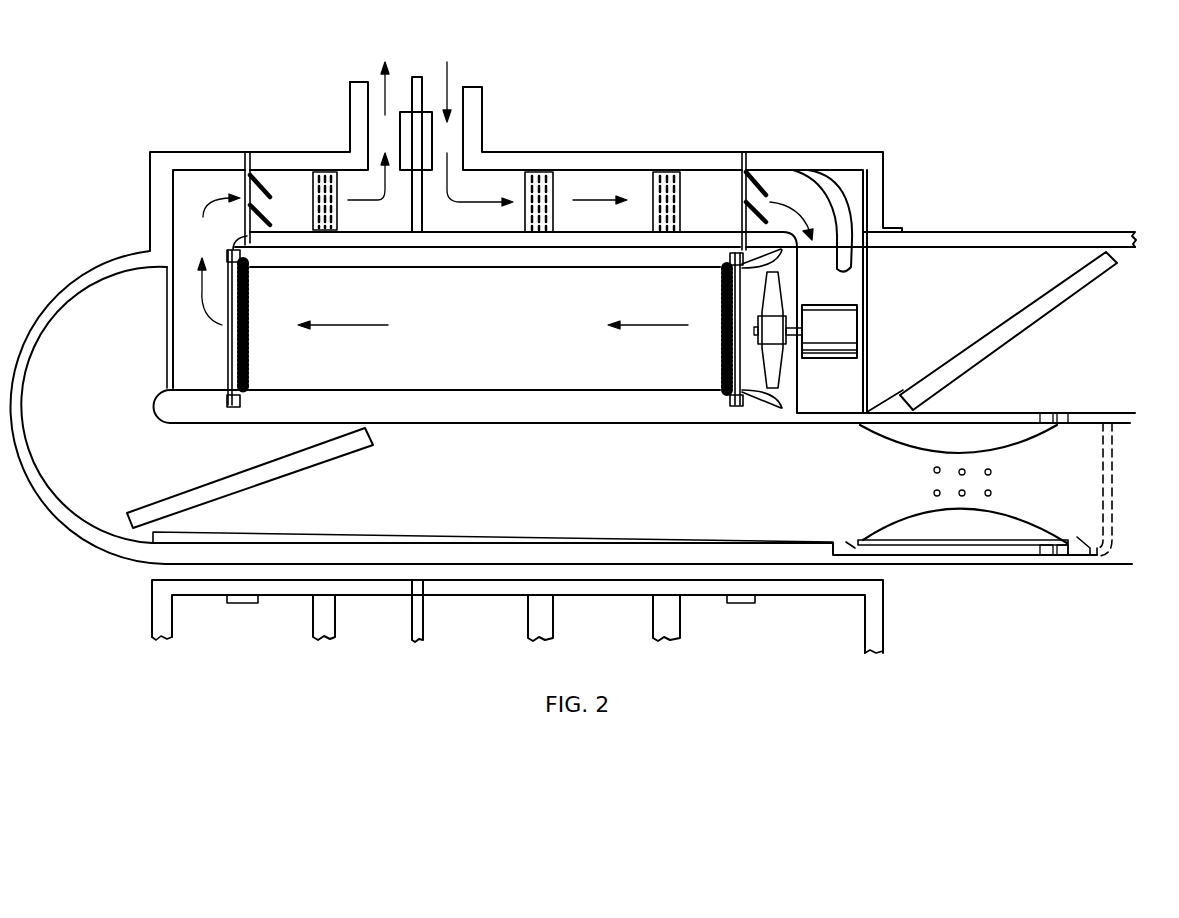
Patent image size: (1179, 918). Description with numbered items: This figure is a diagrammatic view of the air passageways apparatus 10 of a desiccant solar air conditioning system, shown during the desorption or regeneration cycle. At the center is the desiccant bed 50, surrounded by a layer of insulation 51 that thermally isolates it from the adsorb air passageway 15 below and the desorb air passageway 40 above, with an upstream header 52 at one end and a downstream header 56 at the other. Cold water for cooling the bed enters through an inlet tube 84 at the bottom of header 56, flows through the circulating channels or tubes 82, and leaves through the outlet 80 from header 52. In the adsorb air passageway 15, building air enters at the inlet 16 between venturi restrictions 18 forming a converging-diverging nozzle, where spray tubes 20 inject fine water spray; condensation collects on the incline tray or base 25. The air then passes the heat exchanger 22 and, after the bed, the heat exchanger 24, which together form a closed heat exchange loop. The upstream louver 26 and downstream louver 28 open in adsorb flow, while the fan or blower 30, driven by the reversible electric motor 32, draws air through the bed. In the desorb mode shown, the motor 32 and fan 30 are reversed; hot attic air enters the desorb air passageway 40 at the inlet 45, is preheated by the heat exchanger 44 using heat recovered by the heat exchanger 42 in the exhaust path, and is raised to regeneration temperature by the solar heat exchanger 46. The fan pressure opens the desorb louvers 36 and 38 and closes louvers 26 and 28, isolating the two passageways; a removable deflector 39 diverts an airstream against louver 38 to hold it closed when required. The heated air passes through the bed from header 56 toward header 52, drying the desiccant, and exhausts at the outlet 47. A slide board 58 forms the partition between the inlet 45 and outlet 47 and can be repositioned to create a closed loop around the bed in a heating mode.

The air passageways apparatus 10 is at (982, 157).
The adsorb air passageway 15 is at (596, 489).
The inlet 16 is at (1122, 460).
The venturi restrictions 18 is at (1033, 527).
The spray tubes 20 is at (933, 470).
The heat exchanger 22 is at (317, 468).
The heat exchanger 24 is at (1070, 300).
The incline tray or base 25 is at (253, 530).
The upstream shutter or louver 26 is at (168, 300).
The downstream shutter or louver 28 is at (867, 285).
The fan or blower 30 is at (773, 297).
The reversible electric motor 32 is at (845, 357).
The louver 36 is at (267, 187).
The louver 38 is at (757, 175).
The removable deflector 39 is at (853, 268).
The desorb air passageway 40 is at (305, 215).
The heat exchanger 42 is at (312, 172).
The second heat exchanger 44 is at (553, 188).
The inlet 45 is at (453, 90).
The solar heat exchanger 46 is at (680, 188).
The outlet 47 is at (395, 95).
The desiccant bed 50 is at (477, 345).
The layer of insulation 51 is at (567, 260).
The upstream header 52 is at (230, 353).
The downstream header 56 is at (733, 283).
The slide board 58 is at (412, 200).
The outlet 80 is at (242, 257).
The circulating channels or tubes 82 is at (247, 328).
The inlet tube 84 is at (738, 405).